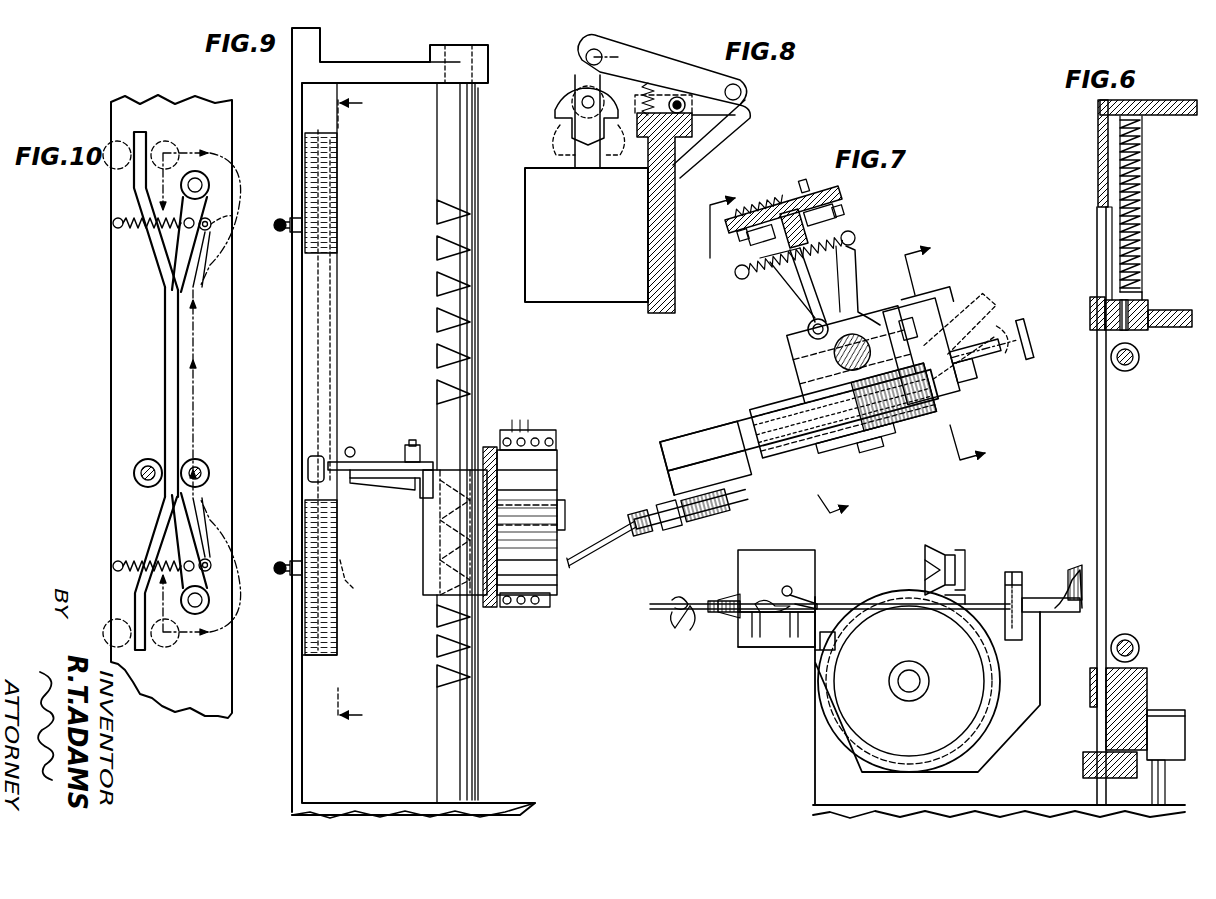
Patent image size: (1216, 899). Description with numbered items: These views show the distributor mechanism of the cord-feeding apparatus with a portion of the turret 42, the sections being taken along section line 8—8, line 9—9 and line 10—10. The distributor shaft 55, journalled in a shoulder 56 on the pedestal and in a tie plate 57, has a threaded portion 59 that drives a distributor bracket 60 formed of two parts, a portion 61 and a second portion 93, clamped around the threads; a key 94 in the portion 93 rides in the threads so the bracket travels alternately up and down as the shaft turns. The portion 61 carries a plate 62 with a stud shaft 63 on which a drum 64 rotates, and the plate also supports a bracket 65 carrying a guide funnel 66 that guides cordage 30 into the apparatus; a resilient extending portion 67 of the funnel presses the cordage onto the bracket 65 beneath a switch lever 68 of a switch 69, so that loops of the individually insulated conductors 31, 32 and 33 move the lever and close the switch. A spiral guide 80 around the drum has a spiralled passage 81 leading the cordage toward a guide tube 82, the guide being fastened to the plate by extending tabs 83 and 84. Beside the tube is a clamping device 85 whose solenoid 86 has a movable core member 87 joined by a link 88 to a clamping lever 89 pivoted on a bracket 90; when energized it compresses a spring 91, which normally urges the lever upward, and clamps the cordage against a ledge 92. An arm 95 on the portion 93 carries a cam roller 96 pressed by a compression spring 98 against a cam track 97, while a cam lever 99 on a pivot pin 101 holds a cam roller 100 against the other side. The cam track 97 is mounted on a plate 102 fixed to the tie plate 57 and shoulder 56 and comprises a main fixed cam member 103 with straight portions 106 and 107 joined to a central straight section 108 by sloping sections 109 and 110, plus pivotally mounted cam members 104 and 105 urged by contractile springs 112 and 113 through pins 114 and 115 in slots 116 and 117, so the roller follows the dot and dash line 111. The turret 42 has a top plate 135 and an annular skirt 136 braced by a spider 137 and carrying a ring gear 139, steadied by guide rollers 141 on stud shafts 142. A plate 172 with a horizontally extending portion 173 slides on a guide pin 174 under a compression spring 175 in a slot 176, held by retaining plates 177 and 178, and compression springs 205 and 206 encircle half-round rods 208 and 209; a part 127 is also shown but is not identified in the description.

In FIG. 7, the section line 8— 8 is at (952, 352).
In FIG. 7, the section line 9— 9 is at (779, 347).
In FIG. 9, the section line 10— 10 is at (364, 411).
In FIG. 8, the cordage 30 is at (685, 95).
In FIG. 7, the cordage 30 is at (645, 525).
In FIG. 6, the cordage 30 is at (660, 606).
In FIG. 6, the individually insulated conductor 31 is at (675, 608).
In FIG. 6, the individually insulated conductor 32 is at (676, 625).
In FIG. 6, the individually insulated conductor 33 is at (692, 630).
In FIG. 6, the turret 42 is at (1096, 138).
In FIG. 9, the distributor shaft 55 is at (480, 372).
In FIG. 6, the distributor shaft 55 is at (948, 545).
In FIG. 9, the shoulder 56 is at (392, 805).
In FIG. 6, the shoulder 56 is at (835, 805).
In FIG. 9, the tie plate 57 is at (388, 72).
In FIG. 9, the threaded portion 59 is at (476, 320).
In FIG. 7, the threaded portion 59 is at (832, 352).
In FIG. 6, the threaded portion 59 is at (925, 568).
In FIG. 9, the distributor bracket 60 is at (490, 482).
In FIG. 7, the distributor bracket 60 is at (805, 368).
In FIG. 9, the portion of distributor bracket 61 is at (500, 497).
In FIG. 7, the portion of distributor bracket 61 is at (812, 385).
In FIG. 9, the plate 62 is at (495, 470).
In FIG. 8, the plate 62 is at (658, 305).
In FIG. 7, the plate 62 is at (720, 440).
In FIG. 6, the plate 62 is at (770, 672).
In FIG. 9, the stud shaft 63 is at (566, 518).
In FIG. 7, the stud shaft 63 is at (862, 475).
In FIG. 6, the stud shaft 63 is at (910, 695).
In FIG. 9, the drum 64 is at (552, 552).
In FIG. 7, the drum 64 is at (900, 440).
In FIG. 6, the drum 64 is at (860, 700).
In FIG. 6, the bracket 65 is at (740, 640).
In FIG. 7, the guide funnel 66 is at (668, 522).
In FIG. 6, the guide funnel 66 is at (728, 598).
In FIG. 6, the extending portion 67 is at (765, 600).
In FIG. 7, the switch lever 68 is at (742, 500).
In FIG. 6, the switch lever 68 is at (800, 600).
In FIG. 7, the switch 69 is at (668, 486).
In FIG. 6, the switch 69 is at (790, 560).
In FIG. 9, the spiral guide 80 is at (547, 432).
In FIG. 7, the spiral guide 80 is at (880, 460).
In FIG. 6, the spiral guide 80 is at (830, 688).
In FIG. 9, the spiralled passage 81 is at (512, 432).
In FIG. 8, the guide tube 82 is at (735, 130).
In FIG. 7, the guide tube 82 is at (982, 345).
In FIG. 6, the guide tube 82 is at (1050, 598).
In FIG. 6, the extending tab 83 is at (830, 675).
In FIG. 6, the extending tab 84 is at (1005, 715).
In FIG. 8, the clamping device 85 is at (752, 100).
In FIG. 7, the clamping device 85 is at (952, 300).
In FIG. 6, the clamping device 85 is at (1010, 565).
In FIG. 8, the solenoid 86 is at (603, 302).
In FIG. 7, the solenoid 86 is at (938, 312).
In FIG. 8, the movable core member 87 is at (563, 112).
In FIG. 8, the link 88 is at (577, 74).
In FIG. 7, the link 88 is at (914, 318).
In FIG. 8, the clamping lever 89 is at (630, 55).
In FIG. 7, the clamping lever 89 is at (932, 332).
In FIG. 8, the bracket 90 is at (748, 110).
In FIG. 7, the bracket 90 is at (940, 405).
In FIG. 8, the spring 91 is at (678, 95).
In FIG. 8, the ledge 92 is at (702, 155).
In FIG. 9, the second portion of distributor bracket 93 is at (423, 567).
In FIG. 7, the second portion of distributor bracket 93 is at (858, 322).
In FIG. 9, the key 94 is at (440, 548).
In FIG. 9, the arm 95 is at (378, 486).
In FIG. 7, the arm 95 is at (842, 275).
In FIG. 10, the cam roller 96 is at (208, 476).
In FIG. 7, the cam roller 96 is at (826, 220).
In FIG. 10, the cam track 97 is at (160, 372).
In FIG. 9, the cam track 97 is at (338, 366).
In FIG. 7, the cam track 97 is at (850, 245).
In FIG. 9, the compression spring 98 is at (352, 450).
In FIG. 7, the compression spring 98 is at (745, 280).
In FIG. 9, the cam lever 99 is at (378, 462).
In FIG. 7, the cam lever 99 is at (785, 288).
In FIG. 10, the cam roller 100 is at (134, 470).
In FIG. 9, the cam roller 100 is at (320, 456).
In FIG. 7, the cam roller 100 is at (760, 245).
In FIG. 9, the pivot pin 101 is at (412, 444).
In FIG. 7, the pivot pin 101 is at (806, 332).
In FIG. 10, the plate 102 is at (118, 310).
In FIG. 9, the plate 102 is at (300, 343).
In FIG. 10, the main fixed cam member 103 is at (162, 397).
In FIG. 9, the main fixed cam member 103 is at (322, 332).
In FIG. 10, the pivotally mounted cam member 104 is at (200, 540).
In FIG. 9, the pivotally mounted cam member 104 is at (355, 590).
In FIG. 10, the pivotally mounted cam member 105 is at (200, 200).
In FIG. 9, the pivotally mounted cam member 105 is at (336, 266).
In FIG. 10, the straight portion 106 is at (140, 652).
In FIG. 9, the straight portion 106 is at (330, 638).
In FIG. 10, the straight portion 107 is at (143, 130).
In FIG. 9, the straight portion 107 is at (330, 152).
In FIG. 10, the central straight section 108 is at (170, 336).
In FIG. 9, the central straight section 108 is at (326, 348).
In FIG. 10, the sloping section 109 is at (162, 528).
In FIG. 9, the sloping section 109 is at (322, 536).
In FIG. 10, the sloping section 110 is at (162, 262).
In FIG. 9, the sloping section 110 is at (336, 240).
In FIG. 10, the dot and dash line 111 is at (196, 406).
In FIG. 10, the contractile spring 112 is at (125, 560).
In FIG. 9, the contractile spring 112 is at (282, 578).
In FIG. 7, the contractile spring 112 is at (776, 190).
In FIG. 10, the contractile spring 113 is at (125, 220).
In FIG. 9, the contractile spring 113 is at (282, 232).
In FIG. 10, the pin 114 is at (212, 560).
In FIG. 7, the pin 114 is at (806, 192).
In FIG. 10, the pin 115 is at (212, 222).
In FIG. 10, the slot 116 is at (212, 572).
In FIG. 10, the slot 117 is at (212, 228).
In FIG. 7, the actuator tab 127 is at (1005, 378).
In FIG. 6, the actuator tab 127 is at (1078, 565).
In FIG. 6, the top plate 135 is at (1175, 100).
In FIG. 6, the annular skirt 136 is at (1096, 158).
In FIG. 6, the spider 137 is at (1180, 305).
In FIG. 6, the ring gear 139 is at (1083, 772).
In FIG. 6, the guide roller 141 is at (1165, 720).
In FIG. 6, the stud shaft 142 is at (1150, 790).
In FIG. 7, the plate 172 is at (1018, 357).
In FIG. 6, the plate 172 is at (1108, 473).
In FIG. 6, the horizontally extending portion 173 is at (1145, 298).
In FIG. 6, the guide pin 174 is at (1142, 226).
In FIG. 6, the compression spring 175 is at (1140, 188).
In FIG. 6, the slot 176 is at (1098, 225).
In FIG. 6, the retaining plate 177 is at (1090, 318).
In FIG. 6, the retaining plate 178 is at (1090, 695).
In FIG. 6, the compression spring 205 is at (1125, 371).
In FIG. 6, the compression spring 206 is at (1130, 634).
In FIG. 6, the half-round rod 208 is at (1138, 352).
In FIG. 6, the half-round rod 209 is at (1135, 366).